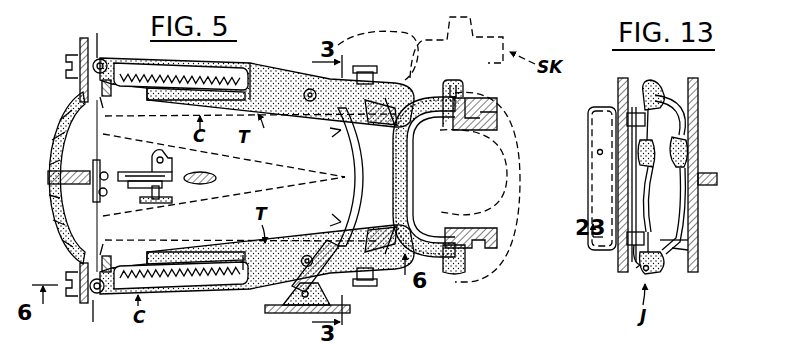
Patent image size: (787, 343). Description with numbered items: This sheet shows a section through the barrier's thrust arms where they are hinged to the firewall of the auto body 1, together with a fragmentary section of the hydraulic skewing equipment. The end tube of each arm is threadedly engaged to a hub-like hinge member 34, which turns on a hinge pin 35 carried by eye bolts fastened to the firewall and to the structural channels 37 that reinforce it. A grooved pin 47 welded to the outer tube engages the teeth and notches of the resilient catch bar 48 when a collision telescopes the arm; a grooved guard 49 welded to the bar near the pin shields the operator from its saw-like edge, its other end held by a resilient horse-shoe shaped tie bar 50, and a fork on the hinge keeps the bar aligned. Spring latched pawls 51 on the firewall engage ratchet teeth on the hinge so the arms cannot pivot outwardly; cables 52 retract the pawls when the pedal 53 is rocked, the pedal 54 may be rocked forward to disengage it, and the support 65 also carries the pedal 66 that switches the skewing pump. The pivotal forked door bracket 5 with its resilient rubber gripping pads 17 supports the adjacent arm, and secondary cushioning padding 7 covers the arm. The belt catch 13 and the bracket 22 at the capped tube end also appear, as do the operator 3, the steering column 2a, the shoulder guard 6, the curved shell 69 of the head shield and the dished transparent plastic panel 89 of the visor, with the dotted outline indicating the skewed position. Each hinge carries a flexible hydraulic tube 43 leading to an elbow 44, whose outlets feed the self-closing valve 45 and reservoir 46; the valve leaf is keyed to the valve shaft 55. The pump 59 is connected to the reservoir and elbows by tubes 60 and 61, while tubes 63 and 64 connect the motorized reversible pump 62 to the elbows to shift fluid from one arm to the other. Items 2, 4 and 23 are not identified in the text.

In FIG. 5, the auto body 1 is at (80, 47).
In FIG. 13, the auto body 1 is at (622, 90).
In FIG. 5, the actuating band 2 is at (353, 196).
In FIG. 5, the steering column 2a is at (58, 169).
In FIG. 13, the steering column 2a is at (699, 187).
In FIG. 5, the operator 3 is at (500, 141).
In FIG. 5, the block 4 is at (497, 124).
In FIG. 5, the pivotal forked door bracket 5 is at (285, 295).
In FIG. 5, the shoulder guard 6 is at (448, 83).
In FIG. 5, the secondary cushioning padding 7 is at (274, 80).
In FIG. 5, the catch 13 is at (366, 82).
In FIG. 5, the resilient rubber gripping pads 17 is at (320, 245).
In FIG. 5, the bracket 22 is at (370, 118).
In FIG. 5, the wedge plate 23 is at (390, 128).
In FIG. 13, the wedge plate 23 is at (667, 237).
In FIG. 5, the hub-like hinge member 34 is at (92, 180).
In FIG. 5, the hinge pin 35 is at (103, 60).
In FIG. 5, the structural channels 37 is at (66, 57).
In FIG. 5, the flexible hydraulic tube 43 is at (111, 92).
In FIG. 13, the elbow 44 is at (660, 94).
In FIG. 13, the self-closing valve 45 is at (626, 114).
In FIG. 13, the reservoir 46 is at (590, 119).
In FIG. 5, the grooved pin 47 is at (310, 101).
In FIG. 5, the resilient catch bar 48 is at (222, 80).
In FIG. 5, the grooved guard 49 is at (165, 92).
In FIG. 5, the resilient horse-shoe shaped tie bar 50 is at (260, 84).
In FIG. 5, the spring latched pawls 51 is at (104, 102).
In FIG. 5, the cables 52 is at (74, 157).
In FIG. 5, the pedal 53 is at (150, 204).
In FIG. 5, the pedal 54 is at (174, 168).
In FIG. 13, the valve shaft 55 is at (633, 266).
In FIG. 13, the pump 59 is at (649, 169).
In FIG. 13, the tube 60 is at (680, 251).
In FIG. 13, the tube 61 is at (668, 126).
In FIG. 13, the motorized reversible pump 62 is at (690, 164).
In FIG. 13, the tube 63 is at (688, 241).
In FIG. 13, the tube 64 is at (672, 121).
In FIG. 5, the support 65 is at (127, 172).
In FIG. 5, the pedal 66 is at (142, 172).
In FIG. 5, the curved shell 69 is at (446, 118).
In FIG. 5, the dished transparent plastic panel 89 is at (400, 198).